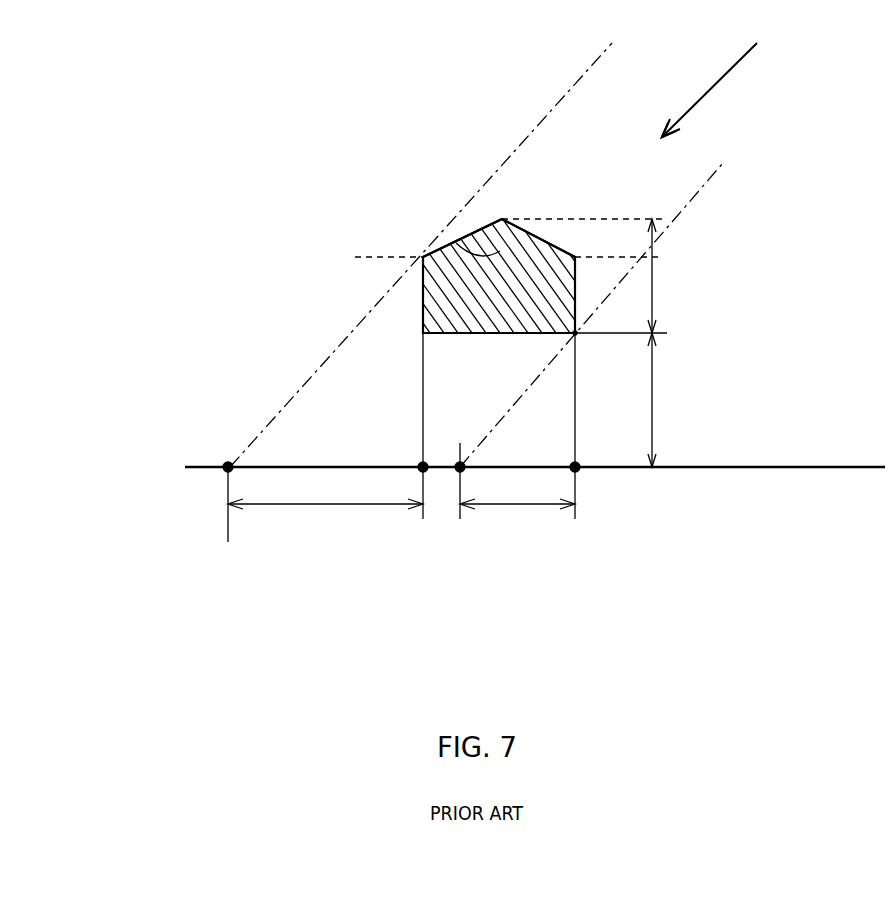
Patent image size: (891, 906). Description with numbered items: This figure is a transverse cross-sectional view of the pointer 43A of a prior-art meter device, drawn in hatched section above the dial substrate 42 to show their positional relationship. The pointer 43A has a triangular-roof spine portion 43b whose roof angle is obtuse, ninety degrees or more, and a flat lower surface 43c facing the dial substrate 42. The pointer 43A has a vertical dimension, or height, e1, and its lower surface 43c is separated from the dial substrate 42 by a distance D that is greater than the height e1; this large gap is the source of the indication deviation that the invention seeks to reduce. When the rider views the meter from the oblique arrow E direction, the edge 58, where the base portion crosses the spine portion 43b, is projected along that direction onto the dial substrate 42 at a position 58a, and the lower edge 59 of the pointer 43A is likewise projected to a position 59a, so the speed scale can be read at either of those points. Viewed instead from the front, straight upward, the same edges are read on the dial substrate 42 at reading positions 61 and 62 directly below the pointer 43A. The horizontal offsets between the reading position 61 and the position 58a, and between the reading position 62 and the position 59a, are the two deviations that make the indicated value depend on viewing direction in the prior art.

The dial substrate 42 is at (713, 467).
The pointer 43A is at (558, 236).
The spine portion 43b is at (541, 232).
The lower surface 43c is at (507, 333).
The edge 58 is at (423, 257).
The position 58a is at (228, 467).
The lower edge 59 is at (577, 331).
The position 59a is at (460, 470).
The reading position 61 is at (422, 466).
The reading position 62 is at (575, 468).
The arrow direction E is at (723, 90).
The vertical dimension e1 is at (652, 290).
The distance D is at (652, 402).